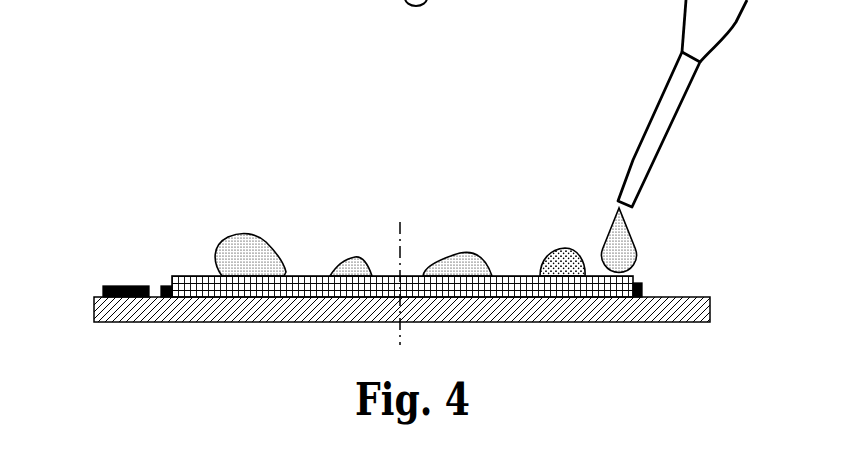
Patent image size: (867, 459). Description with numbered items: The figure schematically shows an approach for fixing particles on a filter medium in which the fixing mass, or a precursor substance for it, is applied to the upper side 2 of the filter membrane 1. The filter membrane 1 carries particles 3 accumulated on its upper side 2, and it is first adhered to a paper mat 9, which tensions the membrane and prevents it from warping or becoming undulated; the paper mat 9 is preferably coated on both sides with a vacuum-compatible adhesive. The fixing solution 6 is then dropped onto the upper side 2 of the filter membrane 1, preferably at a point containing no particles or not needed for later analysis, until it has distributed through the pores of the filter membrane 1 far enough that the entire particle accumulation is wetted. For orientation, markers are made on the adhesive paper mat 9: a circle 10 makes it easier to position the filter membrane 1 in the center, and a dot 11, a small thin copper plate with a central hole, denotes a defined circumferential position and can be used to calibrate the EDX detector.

The filter membrane 1 is at (212, 280).
The upper side 2 is at (166, 255).
The particles 3 is at (347, 263).
The fixing solution 6 is at (627, 252).
The paper mat 9 is at (580, 308).
The circle 10 is at (642, 287).
The dot 11 is at (122, 287).